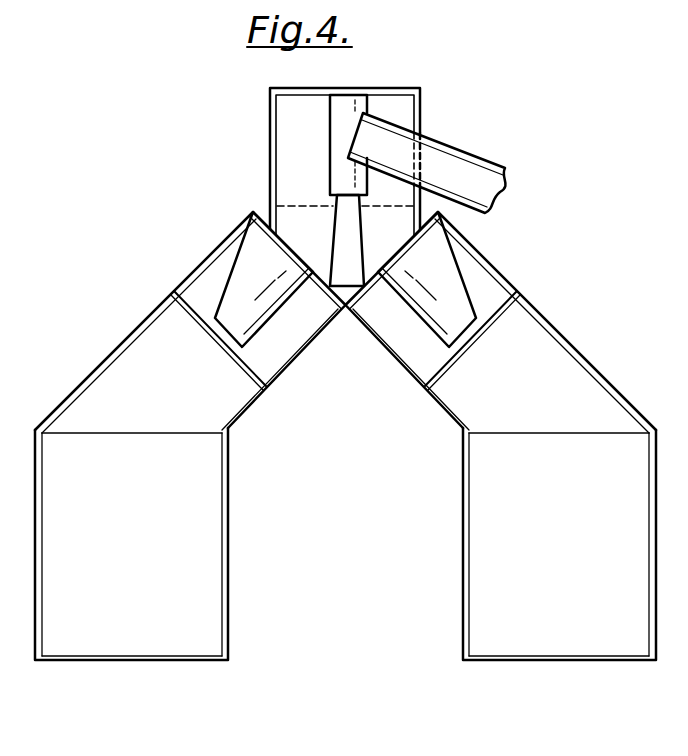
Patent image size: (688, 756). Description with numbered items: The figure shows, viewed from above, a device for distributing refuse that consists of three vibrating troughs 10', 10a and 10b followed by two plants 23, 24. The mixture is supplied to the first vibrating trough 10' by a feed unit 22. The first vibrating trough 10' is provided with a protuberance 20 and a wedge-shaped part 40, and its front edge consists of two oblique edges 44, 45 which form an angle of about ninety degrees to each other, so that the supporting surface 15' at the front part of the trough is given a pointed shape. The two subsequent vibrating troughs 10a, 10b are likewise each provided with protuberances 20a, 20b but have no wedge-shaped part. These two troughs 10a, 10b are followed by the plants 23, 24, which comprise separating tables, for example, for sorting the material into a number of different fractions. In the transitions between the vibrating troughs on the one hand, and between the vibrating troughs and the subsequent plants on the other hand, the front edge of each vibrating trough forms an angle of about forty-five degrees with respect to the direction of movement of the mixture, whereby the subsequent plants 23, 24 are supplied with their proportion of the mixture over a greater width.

The first vibrating trough 10' is at (388, 156).
The protuberance 20 is at (340, 113).
The feed unit 22 is at (447, 165).
The supporting surface 15' is at (312, 185).
The wedge-shaped part 40 is at (345, 248).
The oblique edge 44 is at (288, 255).
The oblique edge 45 is at (418, 262).
The protuberance 20a is at (247, 297).
The protuberance 20b is at (457, 297).
The vibrating trough 10a is at (175, 292).
The vibrating trough 10b is at (520, 296).
The plant 23 is at (148, 652).
The plant 24 is at (572, 655).